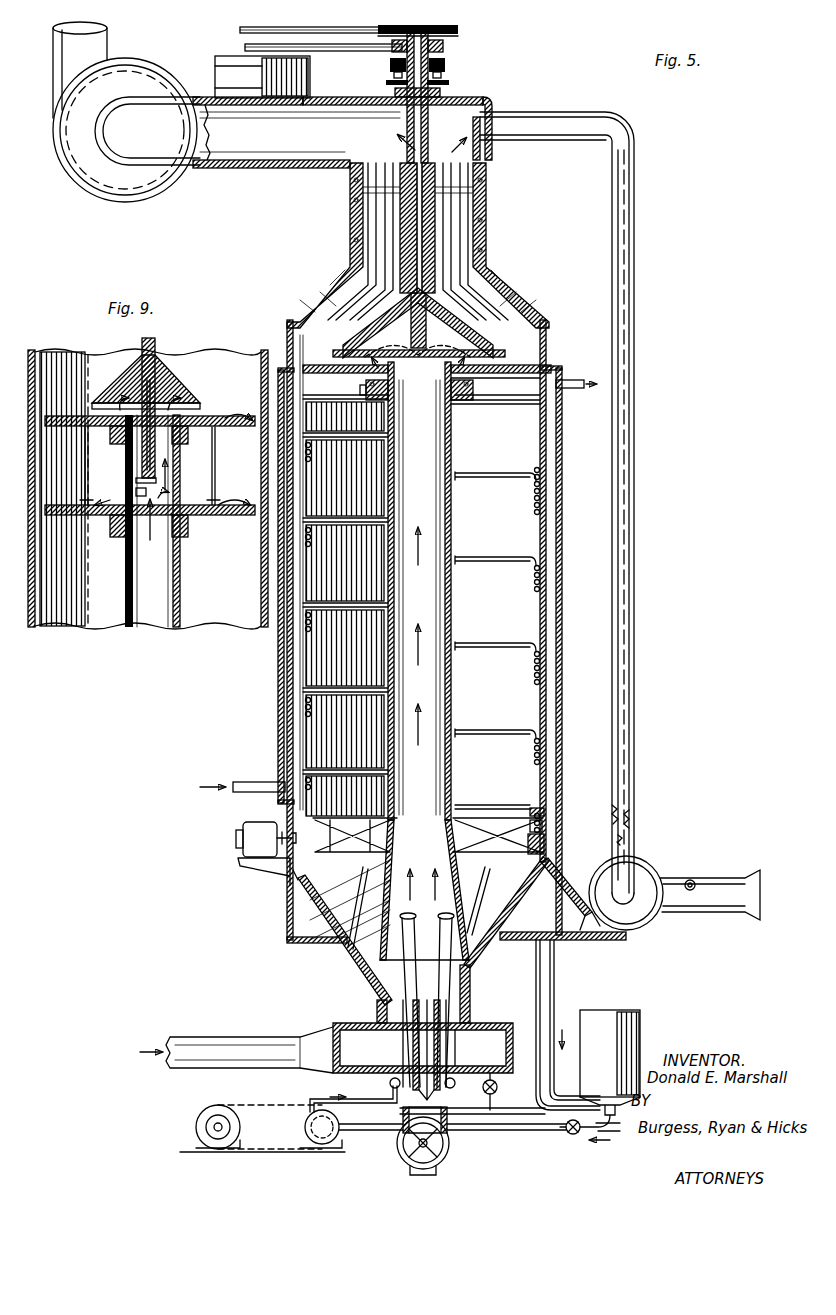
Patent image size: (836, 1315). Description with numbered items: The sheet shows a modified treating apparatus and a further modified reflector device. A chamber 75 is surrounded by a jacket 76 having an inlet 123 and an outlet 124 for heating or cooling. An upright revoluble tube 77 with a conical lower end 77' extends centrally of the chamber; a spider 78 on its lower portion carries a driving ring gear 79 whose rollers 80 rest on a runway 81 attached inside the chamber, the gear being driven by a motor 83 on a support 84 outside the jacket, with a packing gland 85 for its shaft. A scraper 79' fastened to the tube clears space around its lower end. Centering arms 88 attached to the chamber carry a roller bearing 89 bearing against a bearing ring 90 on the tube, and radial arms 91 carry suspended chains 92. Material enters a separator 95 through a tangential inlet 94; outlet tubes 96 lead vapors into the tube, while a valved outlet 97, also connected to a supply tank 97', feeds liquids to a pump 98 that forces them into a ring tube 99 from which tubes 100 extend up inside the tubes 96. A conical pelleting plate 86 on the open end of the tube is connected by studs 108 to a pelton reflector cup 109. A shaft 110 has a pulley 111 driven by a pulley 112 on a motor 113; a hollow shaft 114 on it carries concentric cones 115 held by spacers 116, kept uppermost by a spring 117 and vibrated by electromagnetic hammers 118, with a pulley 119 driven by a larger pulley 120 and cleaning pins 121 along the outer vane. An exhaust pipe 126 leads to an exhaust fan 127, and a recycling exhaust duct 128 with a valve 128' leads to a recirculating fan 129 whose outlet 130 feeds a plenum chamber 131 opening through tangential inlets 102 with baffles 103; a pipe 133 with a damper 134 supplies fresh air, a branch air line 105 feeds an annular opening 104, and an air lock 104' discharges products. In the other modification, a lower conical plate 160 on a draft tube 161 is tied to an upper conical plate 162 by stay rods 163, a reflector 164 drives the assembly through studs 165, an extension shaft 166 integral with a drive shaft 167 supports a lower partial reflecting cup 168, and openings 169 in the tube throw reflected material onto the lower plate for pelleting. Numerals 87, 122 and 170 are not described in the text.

In FIG. 5, the chamber 75 is at (548, 552).
In FIG. 5, the jacket 76 is at (563, 568).
In FIG. 5, the upright revoluble tube 77 is at (437, 661).
In FIG. 5, the conical lower end 77' is at (484, 901).
In FIG. 5, the spider 78 is at (500, 808).
In FIG. 5, the driving ring gear 79 is at (557, 844).
In FIG. 5, the scraper 79' is at (345, 941).
In FIG. 5, the rollers 80 is at (280, 808).
In FIG. 5, the runway 81 is at (548, 826).
In FIG. 5, the motor 83 is at (250, 845).
In FIG. 5, the support 84 is at (256, 875).
In FIG. 5, the packing gland 85 is at (292, 870).
In FIG. 5, the conical plate 86 is at (540, 366).
In FIG. 5, the gland 87 is at (468, 390).
In FIG. 5, the centering arms 88 is at (478, 404).
In FIG. 5, the roller bearing 89 is at (375, 392).
In FIG. 5, the bearing ring 90 is at (380, 402).
In FIG. 5, the radial arms 91 is at (472, 470).
In FIG. 5, the chains 92 is at (533, 512).
In FIG. 5, the tangential inlet 94 is at (218, 1038).
In FIG. 5, the separator 95 is at (358, 1030).
In FIG. 5, the outlet tubes 96 is at (425, 962).
In FIG. 5, the valved outlet 97 is at (472, 1093).
In FIG. 5, the supply tank 97' is at (600, 1059).
In FIG. 5, the pump 98 is at (308, 1112).
In FIG. 5, the ring tube 99 is at (388, 1086).
In FIG. 5, the tubes 100 is at (445, 1066).
In FIG. 5, the tangential inlets 102 is at (490, 918).
In FIG. 5, the baffles 103 is at (532, 872).
In FIG. 5, the annular opening 104 is at (452, 1120).
In FIG. 5, the air lock 104' is at (503, 1146).
In FIG. 5, the branch air line 105 is at (536, 960).
In FIG. 5, the studs 108 is at (470, 352).
In FIG. 5, the pelton reflector cup 109 is at (436, 355).
In FIG. 5, the shaft 110 is at (420, 134).
In FIG. 5, the pulley 111 is at (458, 30).
In FIG. 5, the pulley 112 is at (240, 30).
In FIG. 5, the motor 113 is at (308, 72).
In FIG. 5, the hollow shaft 114 is at (482, 104).
In FIG. 5, the concentric cones 115 is at (455, 225).
In FIG. 5, the spacers 116 is at (480, 178).
In FIG. 5, the spring 117 is at (448, 87).
In FIG. 5, the electromagnetic hammers 118 is at (446, 66).
In FIG. 5, the pulley 119 is at (443, 46).
In FIG. 5, the pulley 120 is at (245, 48).
In FIG. 5, the cleaning pins 121 is at (486, 278).
In FIG. 5, the bead 122 is at (540, 470).
In FIG. 5, the inlet 123 is at (268, 776).
In FIG. 5, the outlet 124 is at (568, 388).
In FIG. 5, the exhaust pipe 126 is at (310, 165).
In FIG. 5, the exhaust fan 127 is at (168, 50).
In FIG. 5, the recycling exhaust duct 128 is at (557, 501).
In FIG. 5, the valve 128' is at (652, 825).
In FIG. 5, the recirculating fan 129 is at (652, 930).
In FIG. 5, the outlet 130 is at (598, 940).
In FIG. 5, the plenum chamber 131 is at (575, 884).
In FIG. 5, the pipe 133 is at (708, 900).
In FIG. 5, the damper 134 is at (700, 870).
In FIG. 9, the lower conical plate 160 is at (225, 518).
In FIG. 9, the draft tube 161 is at (181, 586).
In FIG. 9, the upper conical plate 162 is at (230, 430).
In FIG. 9, the stay rods 163 is at (214, 481).
In FIG. 9, the reflector 164 is at (168, 376).
In FIG. 9, the studs 165 is at (200, 406).
In FIG. 9, the extension shaft 166 is at (180, 390).
In FIG. 9, the drive shaft 167 is at (152, 340).
In FIG. 9, the lower partial reflecting cup 168 is at (160, 478).
In FIG. 9, the openings 169 is at (172, 492).
In FIG. 9, the casing 170 is at (260, 603).